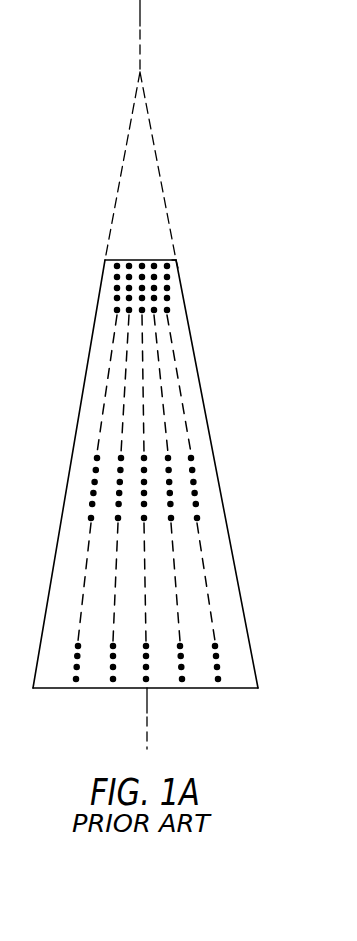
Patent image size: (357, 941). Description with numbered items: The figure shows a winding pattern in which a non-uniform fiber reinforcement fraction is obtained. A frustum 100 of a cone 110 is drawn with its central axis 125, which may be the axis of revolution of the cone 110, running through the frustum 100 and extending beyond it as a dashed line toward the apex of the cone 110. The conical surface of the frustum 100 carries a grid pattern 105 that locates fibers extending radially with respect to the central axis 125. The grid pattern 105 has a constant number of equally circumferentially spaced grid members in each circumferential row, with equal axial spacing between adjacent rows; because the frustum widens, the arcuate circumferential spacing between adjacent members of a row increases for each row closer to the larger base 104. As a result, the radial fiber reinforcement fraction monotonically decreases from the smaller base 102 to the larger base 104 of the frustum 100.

The frustum 100 is at (197, 368).
The smaller base 102 is at (132, 259).
The larger base 104 is at (223, 688).
The grid pattern 105 is at (178, 262).
The cone 110 is at (152, 141).
The central axis 125 is at (141, 22).